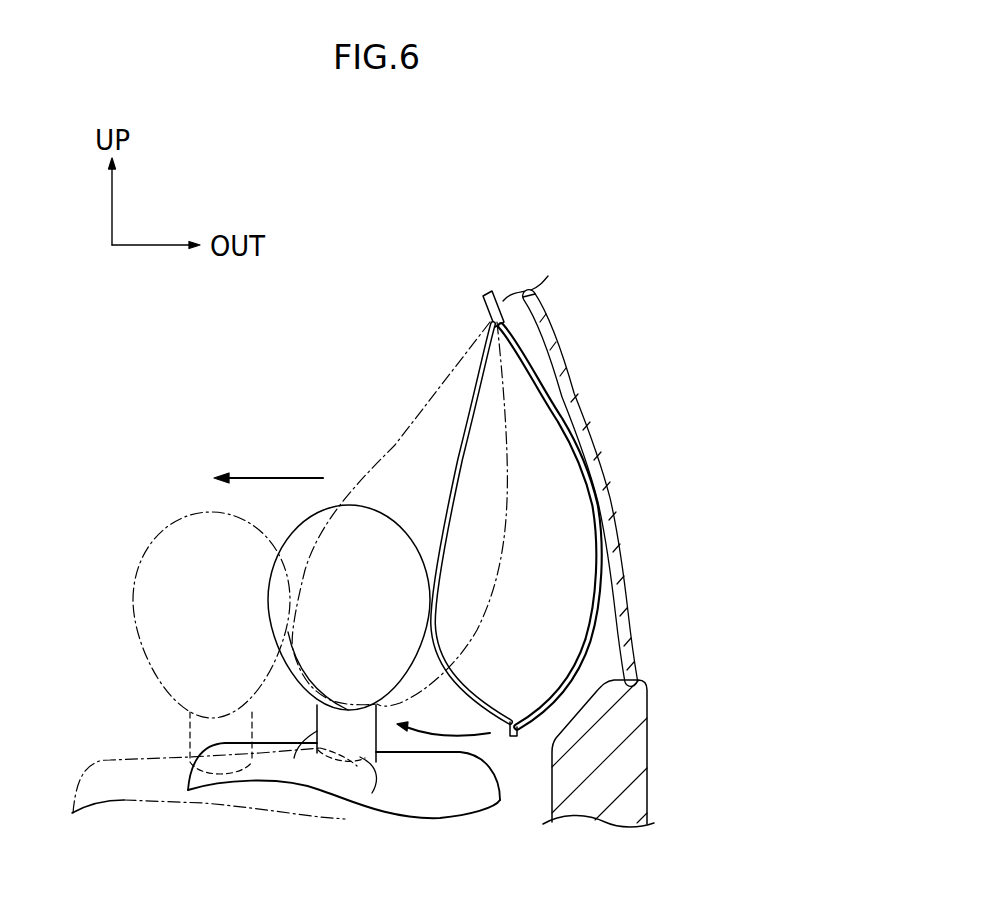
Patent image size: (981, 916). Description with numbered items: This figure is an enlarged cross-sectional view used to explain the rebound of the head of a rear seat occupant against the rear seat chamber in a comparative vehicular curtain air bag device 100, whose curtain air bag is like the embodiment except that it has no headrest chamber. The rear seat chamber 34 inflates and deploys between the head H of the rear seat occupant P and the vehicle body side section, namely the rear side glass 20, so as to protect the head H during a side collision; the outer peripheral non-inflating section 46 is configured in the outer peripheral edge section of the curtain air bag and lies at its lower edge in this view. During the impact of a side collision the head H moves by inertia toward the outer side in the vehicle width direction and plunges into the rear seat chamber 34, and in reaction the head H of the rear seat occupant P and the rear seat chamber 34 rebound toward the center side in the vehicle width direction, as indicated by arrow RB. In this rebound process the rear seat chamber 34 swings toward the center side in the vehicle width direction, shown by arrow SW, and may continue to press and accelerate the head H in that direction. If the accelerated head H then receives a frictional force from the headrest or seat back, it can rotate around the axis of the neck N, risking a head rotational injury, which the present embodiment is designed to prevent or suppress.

The vehicular curtain air bag device 100 is at (422, 303).
The rear side glass 20 is at (568, 352).
The rear seat chamber 34 is at (458, 460).
The outer peripheral non-inflating section 46 is at (519, 734).
The arrow RB is at (268, 473).
The head H is at (270, 602).
The neck N is at (293, 735).
The rear seat occupant P is at (210, 746).
The arrow SW is at (440, 735).